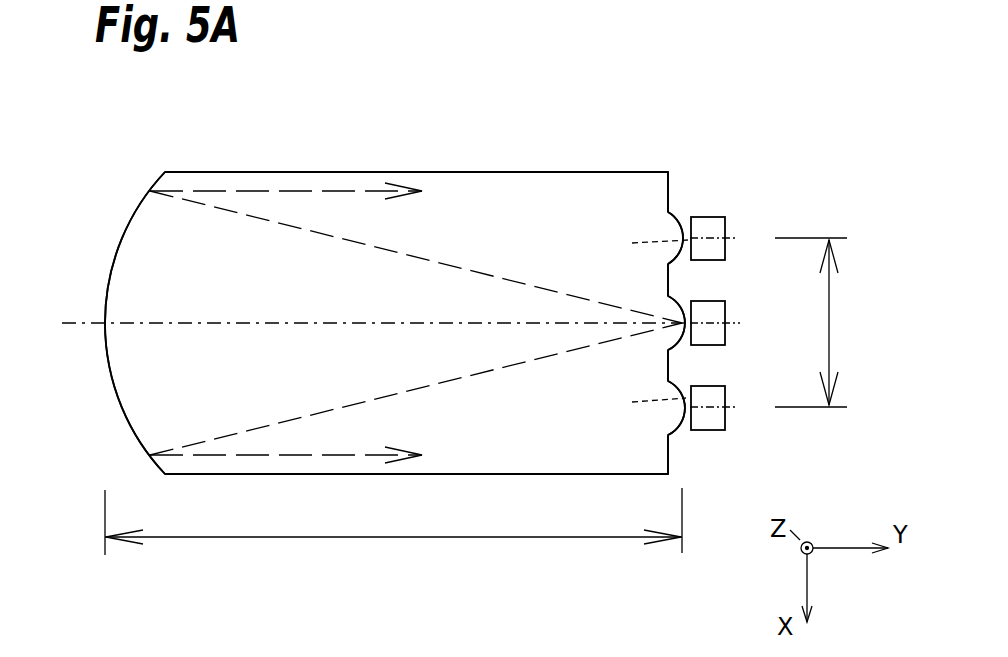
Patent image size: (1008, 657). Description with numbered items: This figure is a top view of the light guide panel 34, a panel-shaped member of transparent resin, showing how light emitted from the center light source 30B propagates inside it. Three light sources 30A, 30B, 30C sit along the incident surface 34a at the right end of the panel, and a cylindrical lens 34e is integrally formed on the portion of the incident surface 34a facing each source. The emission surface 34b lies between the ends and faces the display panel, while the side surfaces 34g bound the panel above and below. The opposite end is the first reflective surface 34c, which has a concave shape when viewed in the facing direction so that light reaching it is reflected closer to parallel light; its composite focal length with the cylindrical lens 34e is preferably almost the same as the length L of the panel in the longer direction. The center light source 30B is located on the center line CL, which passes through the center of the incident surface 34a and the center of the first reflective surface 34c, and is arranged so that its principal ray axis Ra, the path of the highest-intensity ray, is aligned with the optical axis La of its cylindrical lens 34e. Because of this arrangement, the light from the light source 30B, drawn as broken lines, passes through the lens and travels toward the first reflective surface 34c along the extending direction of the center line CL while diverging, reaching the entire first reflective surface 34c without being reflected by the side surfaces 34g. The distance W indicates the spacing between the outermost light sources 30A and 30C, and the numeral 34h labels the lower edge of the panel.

The light guide panel 34 is at (165, 173).
The incident surface 34a is at (673, 188).
The emission surface 34b is at (426, 303).
The first reflective surface 34c is at (106, 284).
The cylindrical lens 34e is at (679, 262).
The side surface 34g is at (414, 172).
The bottom surface of lens 34h is at (449, 476).
The light source 30A is at (713, 431).
The light source 30B is at (726, 311).
The light source 30C is at (706, 217).
The optical axis La is at (662, 243).
The principal ray axis Ra is at (728, 234).
The center line CL is at (240, 322).
The length L is at (393, 531).
The distance W is at (820, 322).